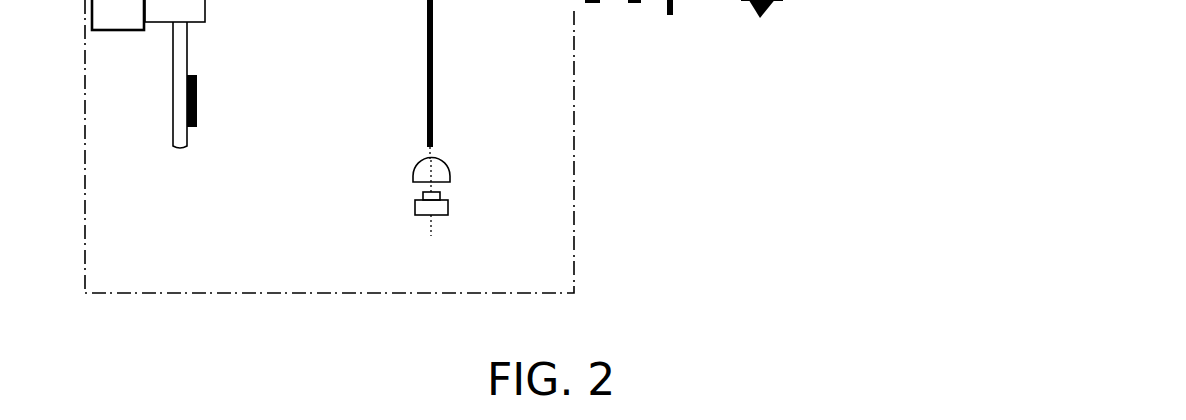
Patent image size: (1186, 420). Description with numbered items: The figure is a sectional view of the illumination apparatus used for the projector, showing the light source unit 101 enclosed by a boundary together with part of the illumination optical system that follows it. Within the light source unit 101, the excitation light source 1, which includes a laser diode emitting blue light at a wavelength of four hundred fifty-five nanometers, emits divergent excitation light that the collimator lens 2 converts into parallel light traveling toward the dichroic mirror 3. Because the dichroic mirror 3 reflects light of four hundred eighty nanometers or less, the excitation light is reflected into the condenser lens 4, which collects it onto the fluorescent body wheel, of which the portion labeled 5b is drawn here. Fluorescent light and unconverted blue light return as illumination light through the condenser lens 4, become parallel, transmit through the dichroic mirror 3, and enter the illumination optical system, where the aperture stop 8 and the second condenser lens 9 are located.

The light source unit 101 is at (382, 295).
The control unit 5b is at (120, 30).
The condenser lens 4 is at (255, 0).
The dichroic mirror 3 is at (524, 0).
The collimator lens 2 is at (448, 173).
The excitation light source 1 is at (448, 215).
The aperture stop 8 is at (669, 15).
The condenser lens 9 is at (760, 18).